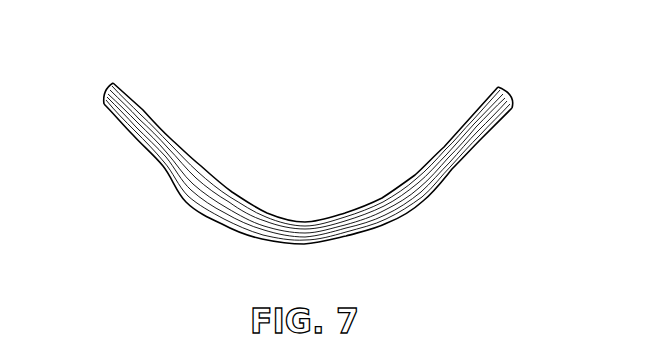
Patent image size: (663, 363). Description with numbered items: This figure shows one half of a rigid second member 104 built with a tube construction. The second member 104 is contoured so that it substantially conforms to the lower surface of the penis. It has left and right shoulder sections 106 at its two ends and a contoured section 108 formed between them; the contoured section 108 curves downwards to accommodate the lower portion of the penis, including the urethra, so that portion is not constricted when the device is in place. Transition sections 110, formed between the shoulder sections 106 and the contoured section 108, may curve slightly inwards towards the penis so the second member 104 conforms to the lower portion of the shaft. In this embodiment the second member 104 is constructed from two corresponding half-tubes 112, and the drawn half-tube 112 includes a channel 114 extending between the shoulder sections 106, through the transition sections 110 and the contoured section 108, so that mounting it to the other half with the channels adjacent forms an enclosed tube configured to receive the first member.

The second member 104 is at (123, 214).
The shoulder section 106 is at (135, 103).
The contoured section 108 is at (307, 222).
The transition section 110 is at (177, 147).
The half-tube 112 is at (477, 103).
The channel 114 is at (412, 198).